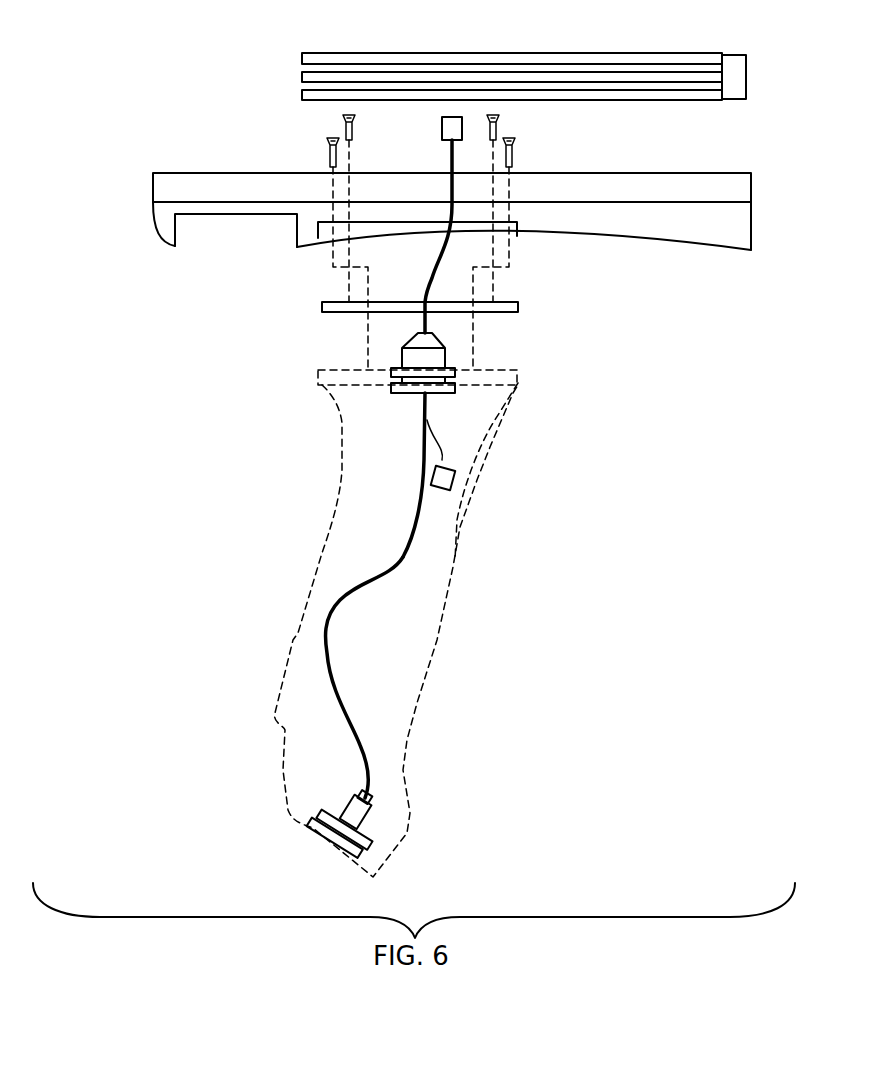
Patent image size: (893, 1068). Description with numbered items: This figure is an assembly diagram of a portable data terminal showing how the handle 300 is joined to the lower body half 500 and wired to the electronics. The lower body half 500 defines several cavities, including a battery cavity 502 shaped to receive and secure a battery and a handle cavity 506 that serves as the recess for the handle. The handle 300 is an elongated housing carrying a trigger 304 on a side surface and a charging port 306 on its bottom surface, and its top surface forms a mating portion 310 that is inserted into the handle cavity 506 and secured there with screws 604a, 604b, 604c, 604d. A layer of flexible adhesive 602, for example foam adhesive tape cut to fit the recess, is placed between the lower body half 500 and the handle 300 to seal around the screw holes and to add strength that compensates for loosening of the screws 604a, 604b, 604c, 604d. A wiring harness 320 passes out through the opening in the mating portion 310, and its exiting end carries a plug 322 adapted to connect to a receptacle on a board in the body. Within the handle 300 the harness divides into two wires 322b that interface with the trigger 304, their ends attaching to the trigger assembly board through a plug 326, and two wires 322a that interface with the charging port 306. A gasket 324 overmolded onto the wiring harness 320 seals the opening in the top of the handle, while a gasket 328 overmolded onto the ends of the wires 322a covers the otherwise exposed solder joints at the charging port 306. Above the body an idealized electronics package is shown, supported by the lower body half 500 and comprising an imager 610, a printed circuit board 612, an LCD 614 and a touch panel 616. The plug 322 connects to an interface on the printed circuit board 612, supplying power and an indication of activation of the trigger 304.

The handle 300 is at (445, 593).
The trigger 304 is at (473, 508).
The charging port 306 is at (325, 853).
The mating portion 310 is at (318, 378).
The wiring harness 320 is at (408, 522).
The plug 322 is at (442, 128).
The wires to charging port 322a is at (327, 650).
The wires to trigger 322b is at (440, 452).
The gasket 324 is at (405, 350).
The plug 326 is at (455, 478).
The gasket 328 is at (360, 828).
The lower body half 500 is at (173, 172).
The battery cavity 502 is at (236, 228).
The handle cavity 506 is at (517, 237).
The flexible adhesive 602 is at (518, 305).
The screw 604a is at (500, 123).
The screw 604b is at (515, 157).
The screw 604c is at (327, 157).
The screw 604d is at (343, 128).
The imager 610 is at (732, 55).
The printed circuit board 612 is at (650, 100).
The LCD 614 is at (302, 78).
The touch panel 616 is at (302, 58).